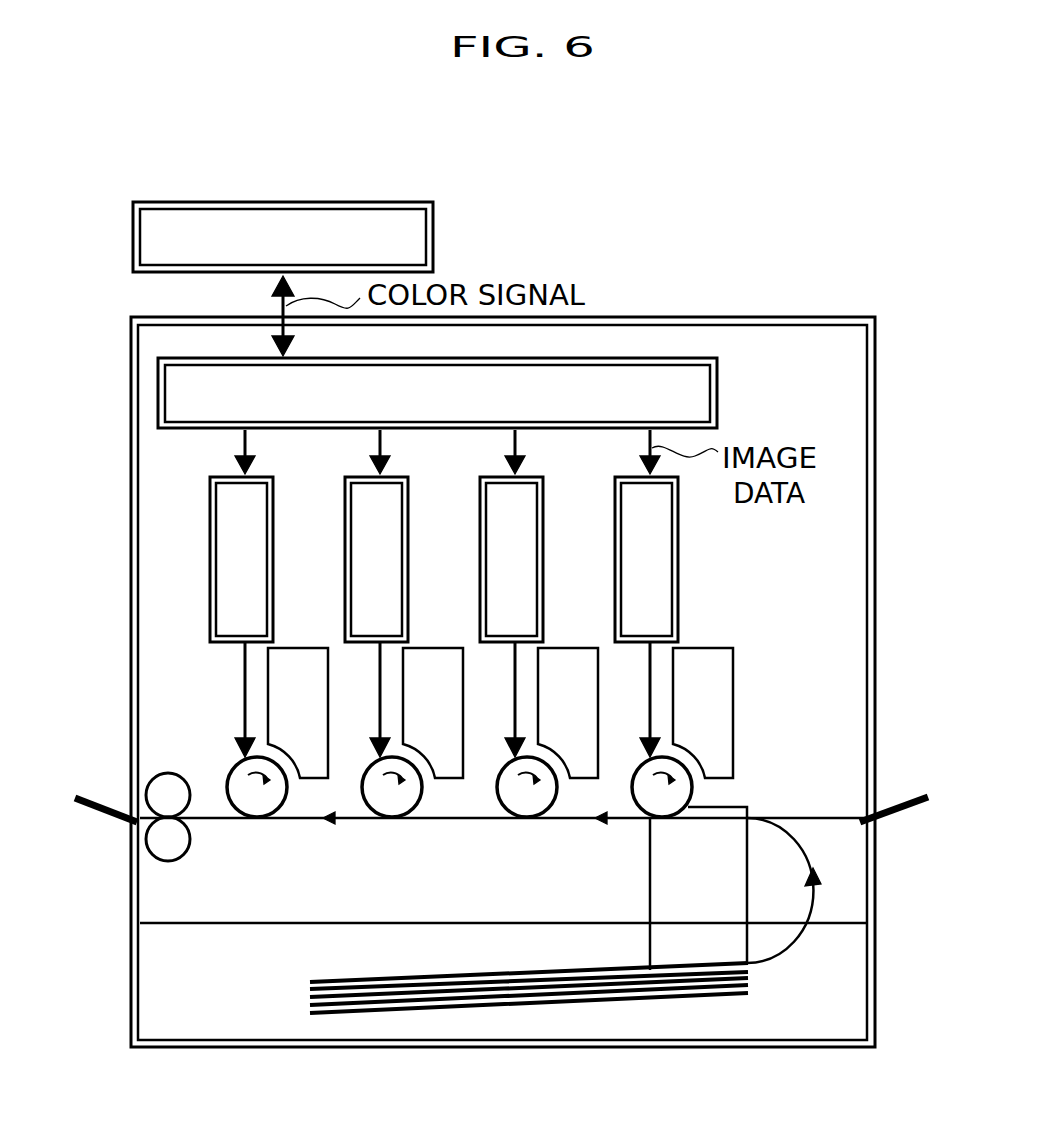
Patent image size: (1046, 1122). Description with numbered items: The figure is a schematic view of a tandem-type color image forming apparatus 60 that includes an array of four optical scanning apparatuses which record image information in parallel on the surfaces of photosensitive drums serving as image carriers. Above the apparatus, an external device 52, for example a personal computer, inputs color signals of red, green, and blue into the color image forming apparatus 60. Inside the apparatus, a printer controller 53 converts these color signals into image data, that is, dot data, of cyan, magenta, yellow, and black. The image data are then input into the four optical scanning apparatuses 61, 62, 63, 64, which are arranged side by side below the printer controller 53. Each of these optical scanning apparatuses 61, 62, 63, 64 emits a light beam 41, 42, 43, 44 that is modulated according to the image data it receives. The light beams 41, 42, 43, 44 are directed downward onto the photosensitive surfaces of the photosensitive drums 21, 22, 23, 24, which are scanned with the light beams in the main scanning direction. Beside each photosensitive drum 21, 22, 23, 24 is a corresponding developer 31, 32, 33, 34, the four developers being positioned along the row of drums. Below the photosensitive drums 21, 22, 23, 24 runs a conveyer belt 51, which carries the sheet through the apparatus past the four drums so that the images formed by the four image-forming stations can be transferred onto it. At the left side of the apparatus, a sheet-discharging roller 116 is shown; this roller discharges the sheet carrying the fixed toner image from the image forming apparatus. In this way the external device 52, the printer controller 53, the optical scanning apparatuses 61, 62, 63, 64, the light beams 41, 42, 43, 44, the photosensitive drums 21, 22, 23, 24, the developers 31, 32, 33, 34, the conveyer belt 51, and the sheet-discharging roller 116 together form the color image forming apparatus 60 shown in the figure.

The external device 52 is at (434, 237).
The printer controller 53 is at (717, 401).
The color image forming apparatus 60 is at (838, 312).
The optical scanning apparatus 61 is at (210, 542).
The optical scanning apparatus 62 is at (345, 542).
The optical scanning apparatus 63 is at (480, 542).
The optical scanning apparatus 64 is at (615, 542).
The developer 31 is at (297, 648).
The developer 32 is at (432, 648).
The developer 33 is at (567, 648).
The developer 34 is at (702, 648).
The light beam 41 is at (244, 728).
The light beam 42 is at (379, 728).
The light beam 43 is at (514, 728).
The light beam 44 is at (649, 728).
The photosensitive drum 21 is at (280, 819).
The photosensitive drum 22 is at (415, 819).
The photosensitive drum 23 is at (550, 819).
The photosensitive drum 24 is at (685, 819).
The sheet-discharging roller 116 is at (146, 790).
The conveyer belt 51 is at (806, 849).